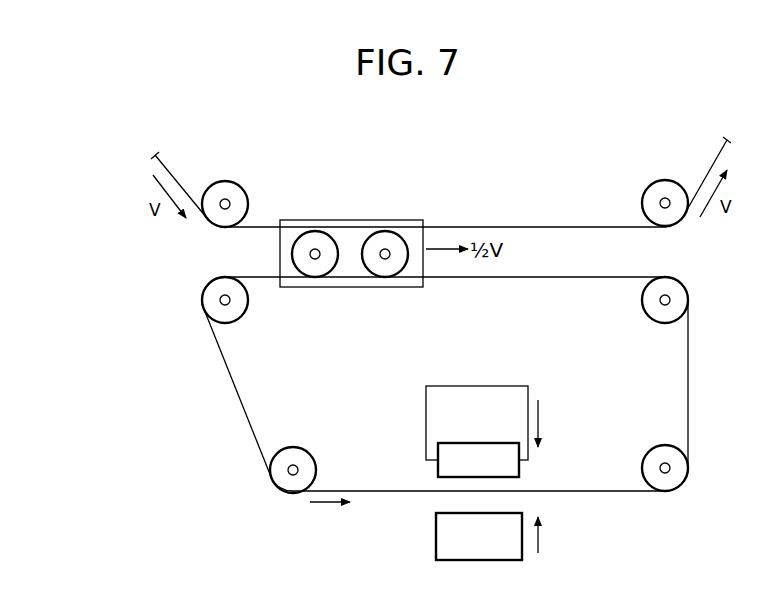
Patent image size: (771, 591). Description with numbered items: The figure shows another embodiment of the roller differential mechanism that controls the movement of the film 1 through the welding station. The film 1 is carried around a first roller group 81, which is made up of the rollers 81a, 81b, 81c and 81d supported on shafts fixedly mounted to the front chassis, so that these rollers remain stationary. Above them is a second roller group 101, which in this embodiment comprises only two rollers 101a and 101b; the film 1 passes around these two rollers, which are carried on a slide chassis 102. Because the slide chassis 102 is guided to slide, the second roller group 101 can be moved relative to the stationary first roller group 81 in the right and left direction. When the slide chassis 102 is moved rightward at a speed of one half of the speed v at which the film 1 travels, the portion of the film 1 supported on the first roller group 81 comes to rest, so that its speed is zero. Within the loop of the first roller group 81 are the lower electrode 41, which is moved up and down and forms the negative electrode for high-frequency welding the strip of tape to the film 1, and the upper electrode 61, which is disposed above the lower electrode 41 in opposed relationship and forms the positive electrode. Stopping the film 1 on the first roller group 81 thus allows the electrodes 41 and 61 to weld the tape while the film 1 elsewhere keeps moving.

The film 1 is at (244, 405).
The lower electrode 41 is at (450, 540).
The upper electrode 61 is at (447, 455).
The first roller group 81 is at (708, 491).
The roller 81a is at (207, 312).
The roller 81b is at (284, 481).
The roller 81c is at (683, 281).
The roller 81d is at (671, 485).
The second roller group 101 is at (410, 208).
The roller 101a is at (324, 265).
The roller 101b is at (385, 265).
The slide chassis 102 is at (414, 221).